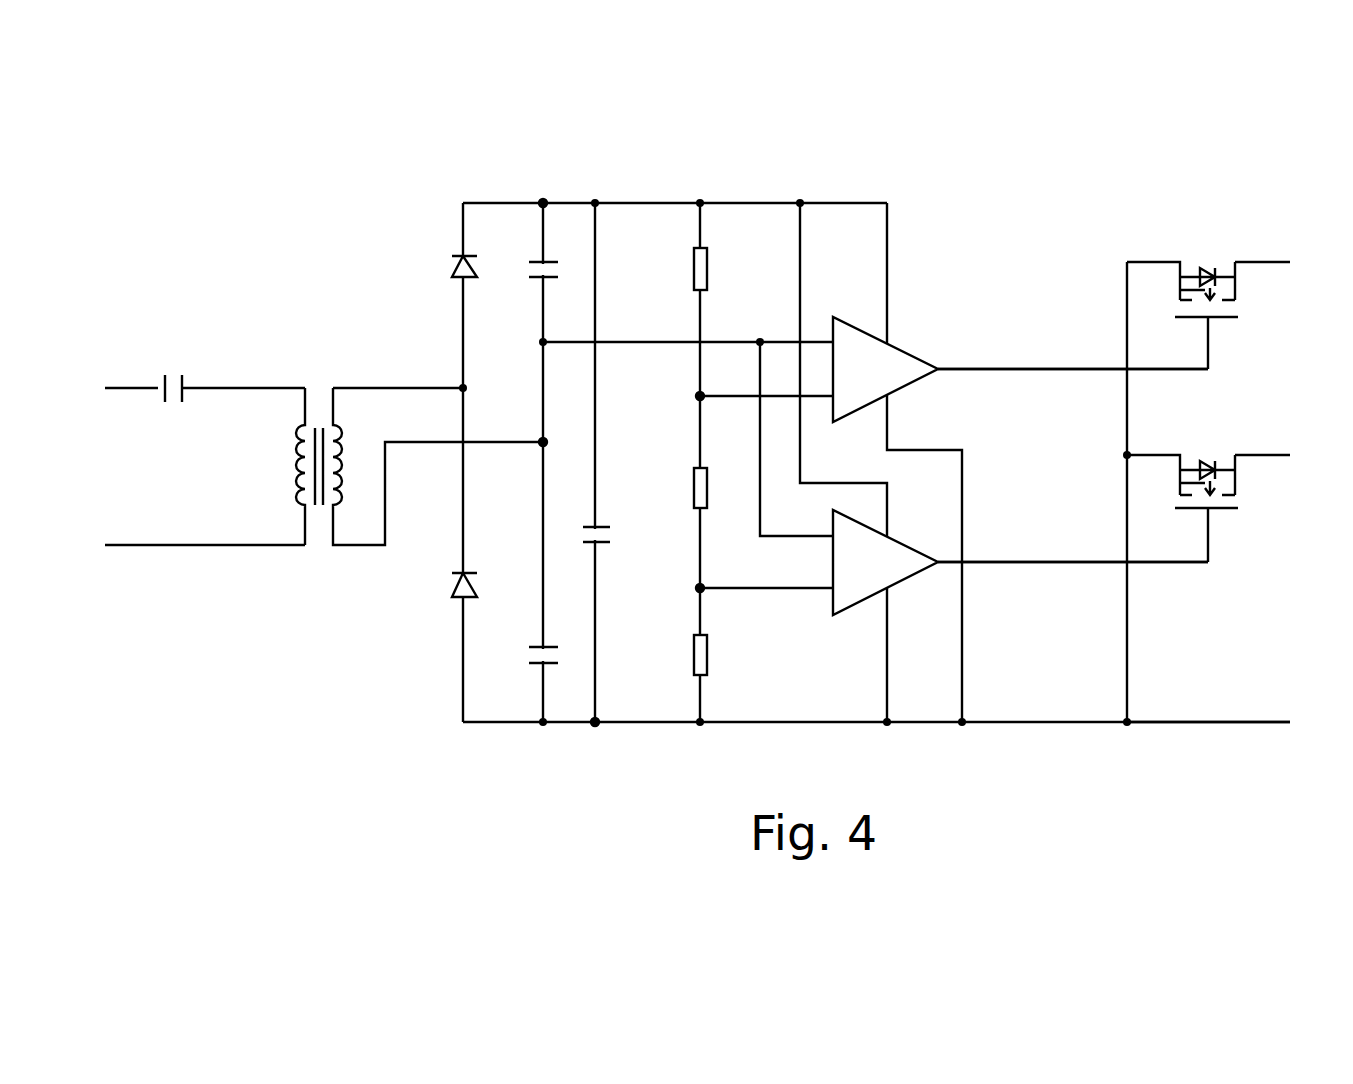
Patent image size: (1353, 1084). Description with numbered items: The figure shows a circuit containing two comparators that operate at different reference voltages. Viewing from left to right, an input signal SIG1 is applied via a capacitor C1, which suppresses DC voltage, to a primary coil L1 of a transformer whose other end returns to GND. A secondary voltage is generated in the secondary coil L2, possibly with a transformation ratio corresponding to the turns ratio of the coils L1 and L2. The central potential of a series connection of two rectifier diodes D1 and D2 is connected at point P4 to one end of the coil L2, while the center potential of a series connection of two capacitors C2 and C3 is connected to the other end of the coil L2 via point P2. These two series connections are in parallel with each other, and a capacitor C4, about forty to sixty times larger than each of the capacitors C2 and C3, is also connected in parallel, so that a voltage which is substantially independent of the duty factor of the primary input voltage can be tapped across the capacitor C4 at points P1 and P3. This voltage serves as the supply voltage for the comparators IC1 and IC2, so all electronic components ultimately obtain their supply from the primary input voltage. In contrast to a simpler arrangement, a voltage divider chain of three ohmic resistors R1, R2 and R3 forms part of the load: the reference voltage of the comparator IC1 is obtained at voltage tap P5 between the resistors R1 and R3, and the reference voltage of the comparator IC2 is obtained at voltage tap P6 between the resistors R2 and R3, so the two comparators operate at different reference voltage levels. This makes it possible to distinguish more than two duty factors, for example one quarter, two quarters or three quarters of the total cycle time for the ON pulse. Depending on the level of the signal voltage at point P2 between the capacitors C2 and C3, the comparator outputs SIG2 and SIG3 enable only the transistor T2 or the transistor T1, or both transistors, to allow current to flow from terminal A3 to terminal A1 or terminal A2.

The input signal terminal SIG1 is at (99, 388).
The capacitor C1 is at (231, 373).
The ground terminal GND is at (172, 545).
The primary coil L1 is at (292, 466).
The secondary coil L2 is at (438, 466).
The point P1 is at (559, 187).
The point P2 is at (526, 428).
The point P3 is at (613, 708).
The point P4 is at (398, 373).
The voltage tap P5 is at (718, 411).
The voltage tap P6 is at (718, 576).
The rectifier diode D1 is at (448, 268).
The rectifier diode D2 is at (448, 585).
The capacitor C2 is at (529, 270).
The capacitor C3 is at (529, 656).
The capacitor C4 is at (582, 536).
The ohmic resistor R1 is at (687, 269).
The ohmic resistor R2 is at (687, 655).
The ohmic resistor R3 is at (687, 488).
The comparator IC1 is at (887, 369).
The comparator IC2 is at (887, 561).
The comparator output signal SIG2 is at (1073, 353).
The comparator output signal SIG3 is at (1073, 546).
The transistor T1 is at (1182, 294).
The transistor T2 is at (1182, 486).
The terminal A1 is at (1281, 262).
The terminal A2 is at (1281, 455).
The terminal A3 is at (1227, 723).